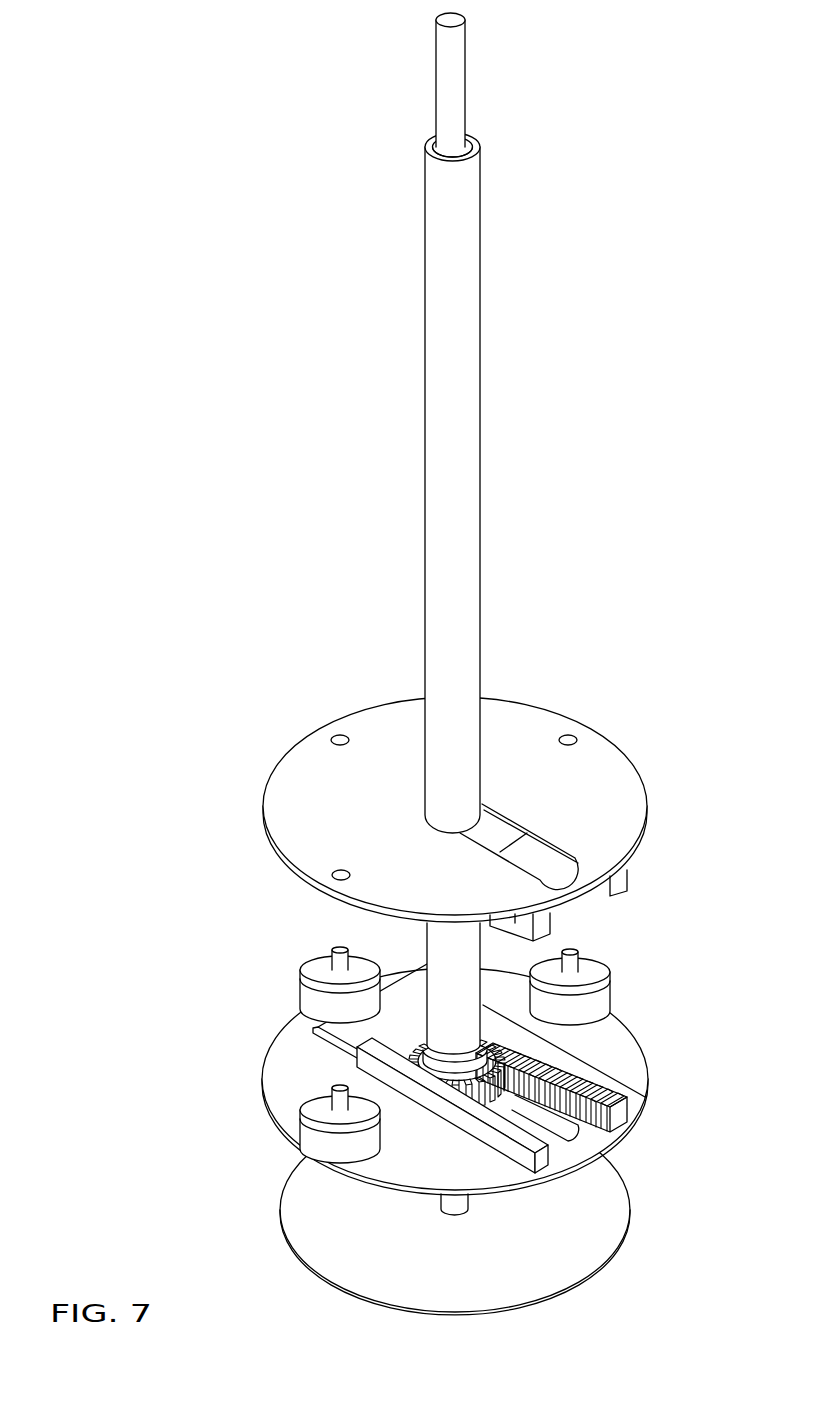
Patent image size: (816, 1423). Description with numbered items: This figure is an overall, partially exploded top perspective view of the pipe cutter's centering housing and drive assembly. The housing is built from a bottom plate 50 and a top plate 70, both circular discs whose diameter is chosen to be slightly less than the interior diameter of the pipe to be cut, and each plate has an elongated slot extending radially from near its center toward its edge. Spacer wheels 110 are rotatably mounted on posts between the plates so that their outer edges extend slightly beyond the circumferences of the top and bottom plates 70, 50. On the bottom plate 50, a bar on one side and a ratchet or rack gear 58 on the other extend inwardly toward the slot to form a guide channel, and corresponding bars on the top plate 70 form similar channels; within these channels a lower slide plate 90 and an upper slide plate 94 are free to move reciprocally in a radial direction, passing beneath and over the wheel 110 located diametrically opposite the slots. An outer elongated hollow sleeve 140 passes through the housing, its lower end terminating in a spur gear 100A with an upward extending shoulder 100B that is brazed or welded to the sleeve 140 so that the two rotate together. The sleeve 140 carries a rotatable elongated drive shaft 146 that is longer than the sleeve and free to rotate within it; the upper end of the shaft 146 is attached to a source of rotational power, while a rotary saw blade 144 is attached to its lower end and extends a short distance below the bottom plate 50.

The bottom plate 50 is at (298, 1077).
The ratchet gear 58 is at (613, 1108).
The top plate 70 is at (521, 738).
The lower slide plate 90 is at (500, 830).
The upper slide plate 94 is at (497, 1097).
The spur gear 100A is at (622, 1026).
The upward extending shoulder 100B is at (486, 1052).
The spacer wheels 110 is at (313, 1003).
The outer elongated hollow sleeve 140 is at (463, 490).
The rotary saw blade 144 is at (547, 1273).
The drive shaft 146 is at (452, 93).